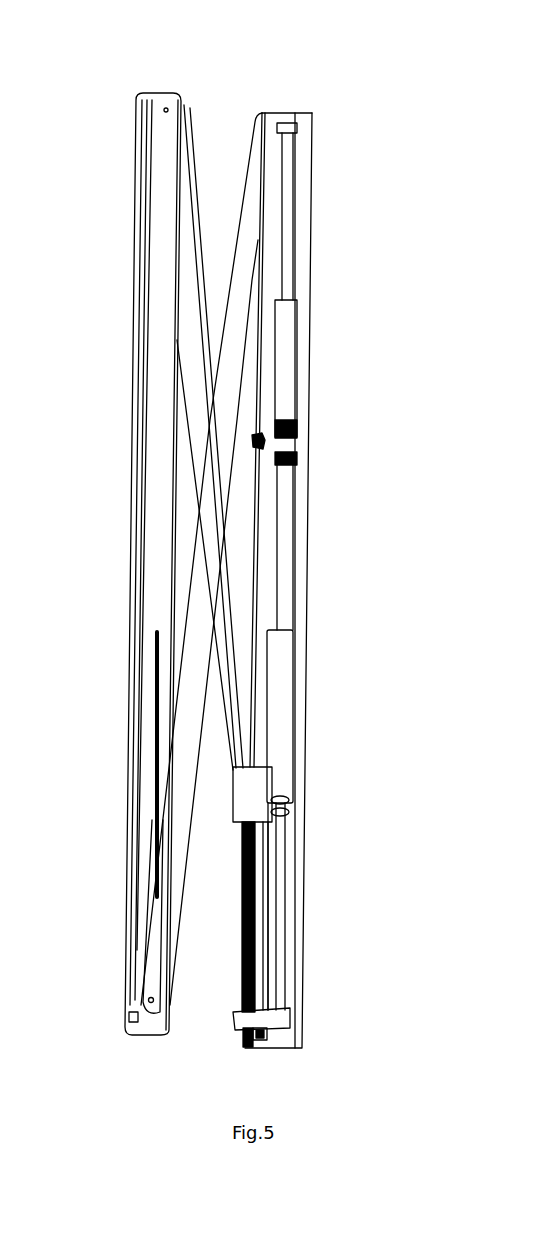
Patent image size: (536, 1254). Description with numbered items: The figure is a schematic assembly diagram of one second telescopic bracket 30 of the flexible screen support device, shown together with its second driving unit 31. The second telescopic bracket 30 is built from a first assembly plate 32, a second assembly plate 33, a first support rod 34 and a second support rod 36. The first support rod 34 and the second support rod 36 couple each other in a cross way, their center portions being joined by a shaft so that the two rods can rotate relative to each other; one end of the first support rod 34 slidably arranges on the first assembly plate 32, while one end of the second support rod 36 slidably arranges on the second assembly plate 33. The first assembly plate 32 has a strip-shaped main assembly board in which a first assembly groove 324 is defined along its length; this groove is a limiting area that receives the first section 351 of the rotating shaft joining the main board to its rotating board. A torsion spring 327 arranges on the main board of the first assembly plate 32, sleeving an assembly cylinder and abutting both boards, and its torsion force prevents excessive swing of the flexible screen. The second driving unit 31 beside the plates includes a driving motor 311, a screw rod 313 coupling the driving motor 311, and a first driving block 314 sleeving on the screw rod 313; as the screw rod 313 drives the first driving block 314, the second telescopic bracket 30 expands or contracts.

The second telescopic bracket 30 is at (305, 100).
The second driving unit 31 is at (400, 905).
The driving motor 311 is at (283, 815).
The screw rod 313 is at (259, 976).
The first driving block 314 is at (245, 1022).
The first assembly plate 32 is at (299, 263).
The first assembly groove 324 is at (290, 838).
The torsion spring 327 is at (293, 422).
The second assembly plate 33 is at (155, 310).
The first support rod 34 is at (200, 463).
The second support rod 36 is at (215, 485).
The first section 351 is at (247, 932).